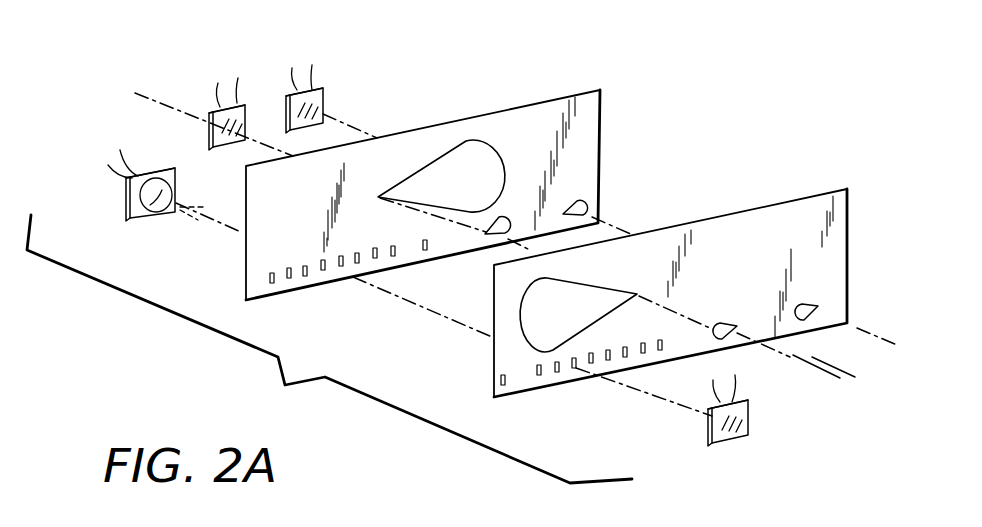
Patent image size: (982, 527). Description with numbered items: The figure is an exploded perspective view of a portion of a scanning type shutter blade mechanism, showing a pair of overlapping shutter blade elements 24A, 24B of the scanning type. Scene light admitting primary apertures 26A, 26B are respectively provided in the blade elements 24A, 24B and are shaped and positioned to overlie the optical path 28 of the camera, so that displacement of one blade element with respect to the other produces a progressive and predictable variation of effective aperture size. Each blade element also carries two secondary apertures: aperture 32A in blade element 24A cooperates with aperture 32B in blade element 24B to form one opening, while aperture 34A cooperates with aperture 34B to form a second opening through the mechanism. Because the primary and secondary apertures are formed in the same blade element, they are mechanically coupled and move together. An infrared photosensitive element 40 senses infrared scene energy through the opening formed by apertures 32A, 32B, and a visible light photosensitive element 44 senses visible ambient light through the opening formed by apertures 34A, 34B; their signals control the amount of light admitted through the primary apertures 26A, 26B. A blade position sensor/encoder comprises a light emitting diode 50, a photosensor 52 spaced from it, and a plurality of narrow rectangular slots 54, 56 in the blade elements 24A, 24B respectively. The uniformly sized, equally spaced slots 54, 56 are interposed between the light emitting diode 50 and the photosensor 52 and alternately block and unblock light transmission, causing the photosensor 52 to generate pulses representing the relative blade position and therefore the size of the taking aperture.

The shutter blade element 24A is at (742, 210).
The shutter blade element 24B is at (552, 95).
The primary aperture 26A is at (532, 328).
The primary aperture 26B is at (460, 167).
The optical path 28 is at (148, 99).
The secondary aperture 32A is at (727, 325).
The secondary aperture 32B is at (505, 239).
The secondary aperture 34A is at (804, 308).
The secondary aperture 34B is at (583, 209).
The infrared photosensitive element 40 is at (209, 113).
The visible light photosensitive element 44 is at (327, 105).
The light emitting diode 50 is at (158, 220).
The photosensor 52 is at (750, 417).
The slots 54 is at (538, 375).
The slots 56 is at (306, 277).